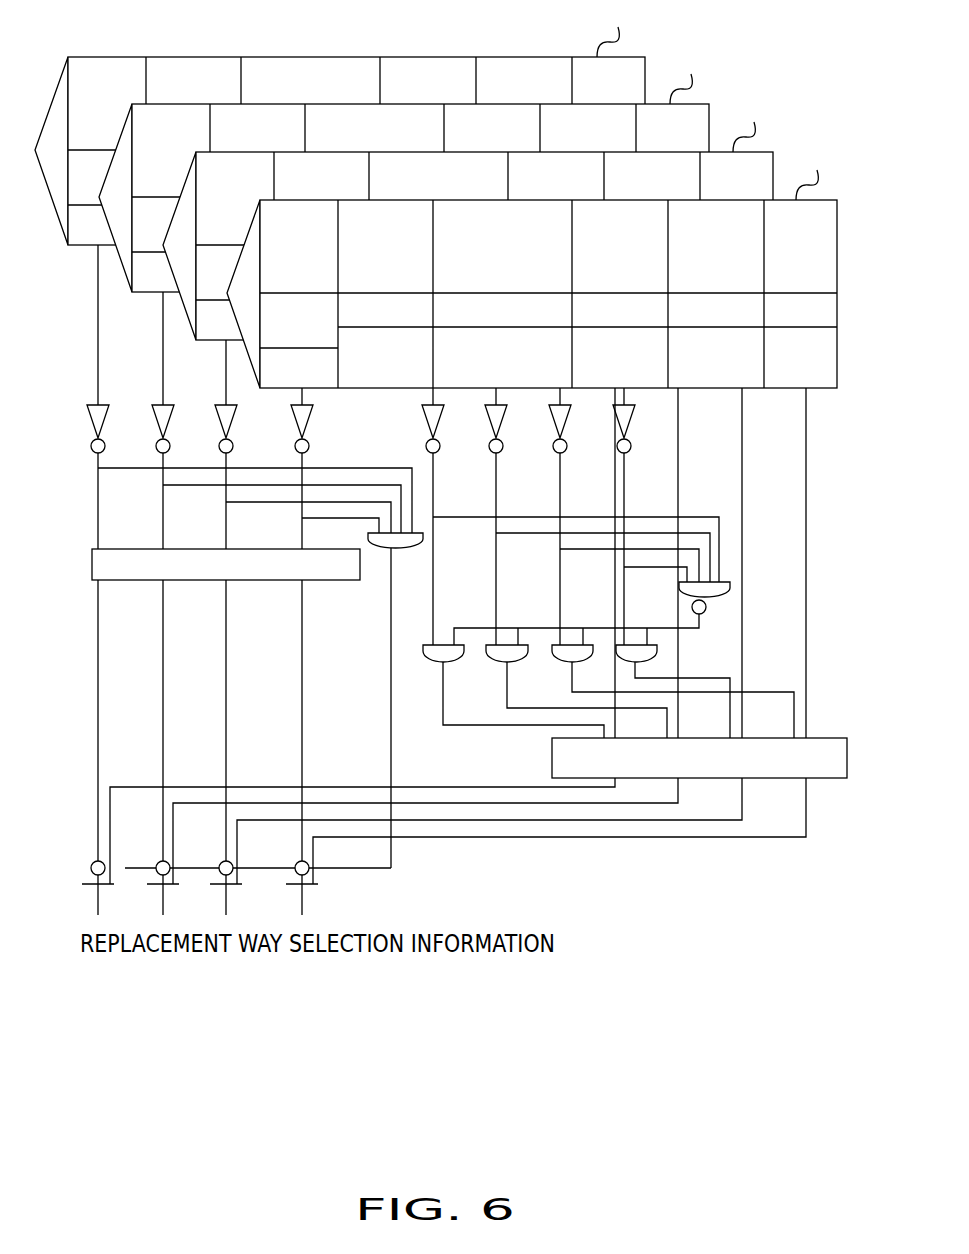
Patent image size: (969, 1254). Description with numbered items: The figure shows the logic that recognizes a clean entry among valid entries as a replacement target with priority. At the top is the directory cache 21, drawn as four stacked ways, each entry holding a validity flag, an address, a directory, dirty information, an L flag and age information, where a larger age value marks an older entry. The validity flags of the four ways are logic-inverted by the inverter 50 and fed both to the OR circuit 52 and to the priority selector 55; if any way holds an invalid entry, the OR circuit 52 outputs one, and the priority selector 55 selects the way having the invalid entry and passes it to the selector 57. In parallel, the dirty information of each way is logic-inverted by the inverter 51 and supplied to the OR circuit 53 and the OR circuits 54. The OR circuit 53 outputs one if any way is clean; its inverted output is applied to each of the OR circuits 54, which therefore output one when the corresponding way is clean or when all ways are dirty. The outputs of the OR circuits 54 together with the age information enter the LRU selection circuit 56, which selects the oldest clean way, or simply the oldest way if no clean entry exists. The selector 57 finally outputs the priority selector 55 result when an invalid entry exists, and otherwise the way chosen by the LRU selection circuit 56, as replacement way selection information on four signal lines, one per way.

The directory cache 21 is at (448, 194).
The inverter 50 is at (80, 403).
The inverter 51 is at (642, 403).
The OR circuit 52 is at (408, 548).
The OR circuit 53 is at (715, 598).
The OR circuits 54 is at (658, 671).
The priority selector 55 is at (92, 566).
The LRU selection circuit 56 is at (835, 738).
The selector 57 is at (80, 850).